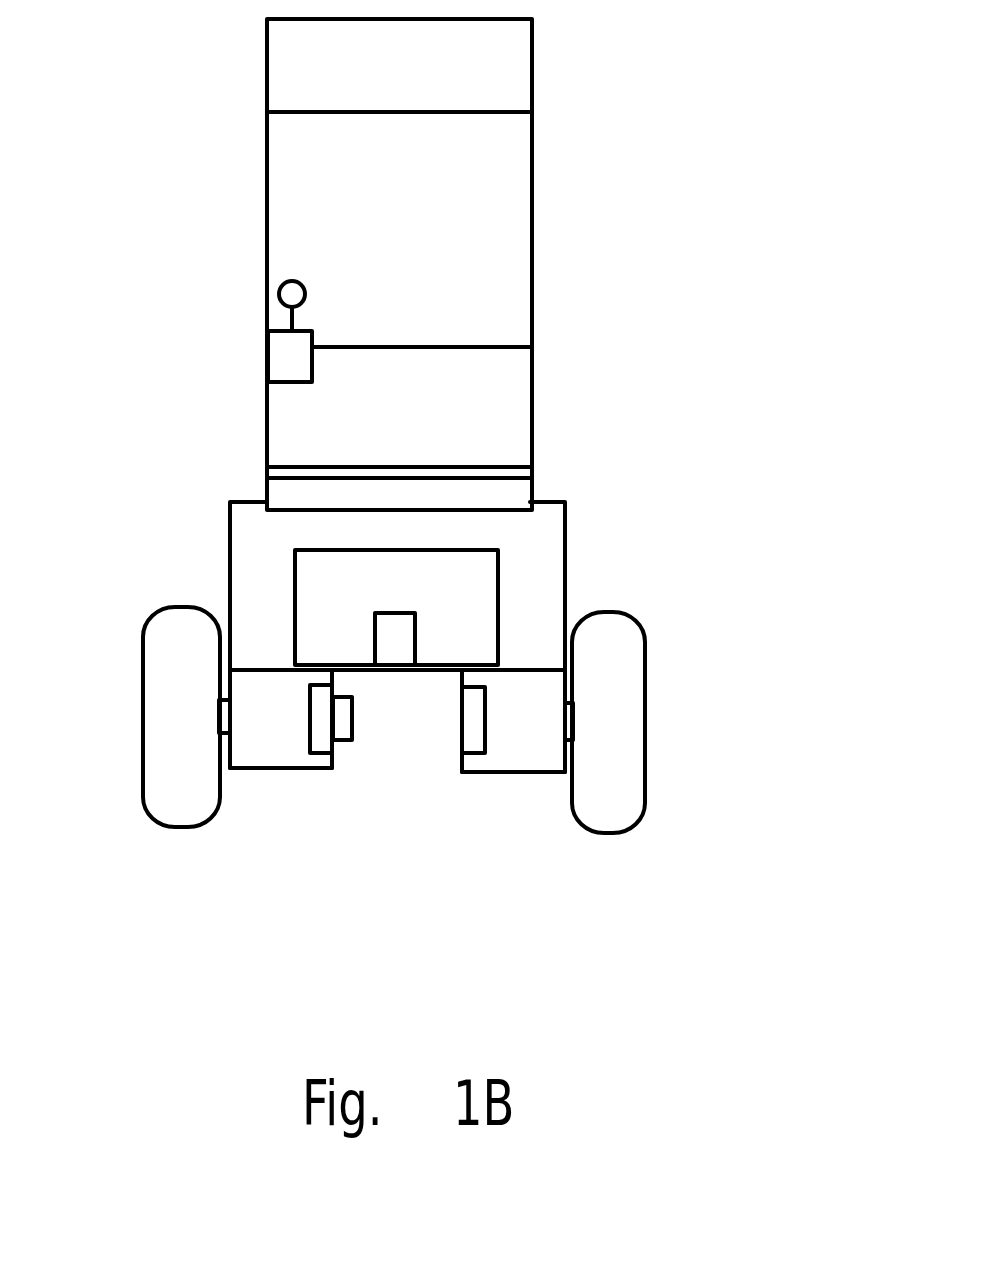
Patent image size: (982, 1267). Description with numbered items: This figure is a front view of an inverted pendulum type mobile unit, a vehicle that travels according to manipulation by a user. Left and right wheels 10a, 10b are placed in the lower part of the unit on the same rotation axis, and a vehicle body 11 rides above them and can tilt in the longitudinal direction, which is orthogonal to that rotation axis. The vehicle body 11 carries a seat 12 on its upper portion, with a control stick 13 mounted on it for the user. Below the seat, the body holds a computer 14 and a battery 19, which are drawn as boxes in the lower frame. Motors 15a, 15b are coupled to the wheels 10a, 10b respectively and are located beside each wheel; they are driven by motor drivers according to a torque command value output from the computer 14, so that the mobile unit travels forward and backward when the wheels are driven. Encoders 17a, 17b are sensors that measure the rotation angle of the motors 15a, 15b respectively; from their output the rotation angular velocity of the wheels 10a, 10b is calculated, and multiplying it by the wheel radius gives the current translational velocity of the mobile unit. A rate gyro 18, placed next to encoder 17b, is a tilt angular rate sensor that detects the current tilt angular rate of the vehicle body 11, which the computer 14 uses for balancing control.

The wheel 10a is at (645, 683).
The wheel 10b is at (167, 610).
The vehicle body 11 is at (632, 424).
The seat 12 is at (527, 228).
The control stick 13 is at (292, 286).
The computer 14 is at (397, 653).
The motor 15a is at (533, 765).
The motor 15b is at (267, 753).
The encoder 17a is at (470, 740).
The encoder 17b is at (318, 737).
The rate gyro 18 is at (340, 733).
The battery 19 is at (498, 568).